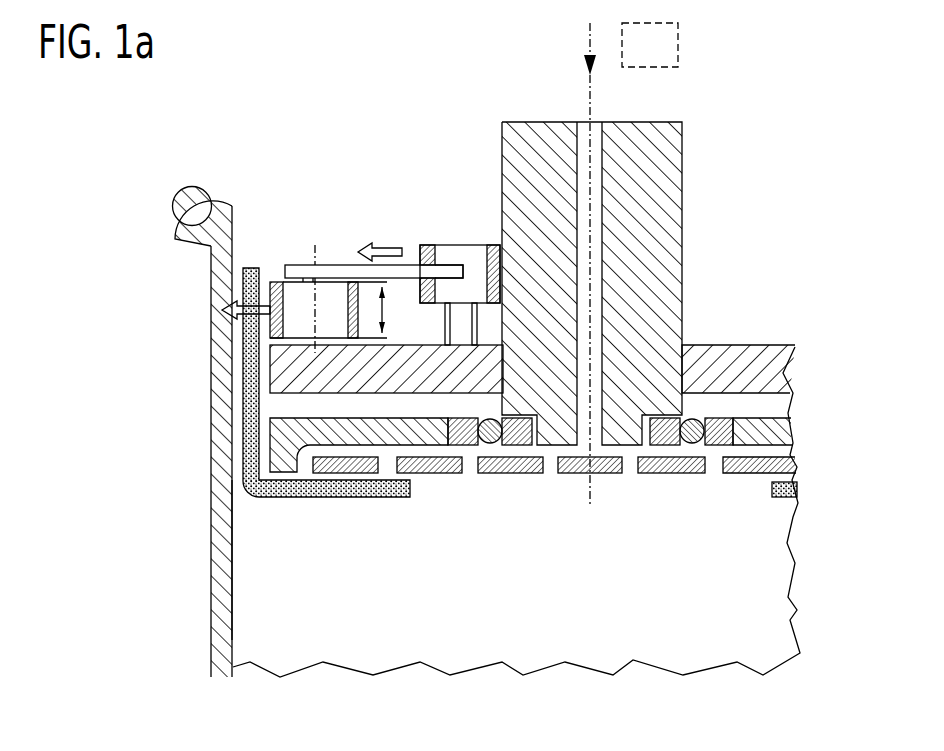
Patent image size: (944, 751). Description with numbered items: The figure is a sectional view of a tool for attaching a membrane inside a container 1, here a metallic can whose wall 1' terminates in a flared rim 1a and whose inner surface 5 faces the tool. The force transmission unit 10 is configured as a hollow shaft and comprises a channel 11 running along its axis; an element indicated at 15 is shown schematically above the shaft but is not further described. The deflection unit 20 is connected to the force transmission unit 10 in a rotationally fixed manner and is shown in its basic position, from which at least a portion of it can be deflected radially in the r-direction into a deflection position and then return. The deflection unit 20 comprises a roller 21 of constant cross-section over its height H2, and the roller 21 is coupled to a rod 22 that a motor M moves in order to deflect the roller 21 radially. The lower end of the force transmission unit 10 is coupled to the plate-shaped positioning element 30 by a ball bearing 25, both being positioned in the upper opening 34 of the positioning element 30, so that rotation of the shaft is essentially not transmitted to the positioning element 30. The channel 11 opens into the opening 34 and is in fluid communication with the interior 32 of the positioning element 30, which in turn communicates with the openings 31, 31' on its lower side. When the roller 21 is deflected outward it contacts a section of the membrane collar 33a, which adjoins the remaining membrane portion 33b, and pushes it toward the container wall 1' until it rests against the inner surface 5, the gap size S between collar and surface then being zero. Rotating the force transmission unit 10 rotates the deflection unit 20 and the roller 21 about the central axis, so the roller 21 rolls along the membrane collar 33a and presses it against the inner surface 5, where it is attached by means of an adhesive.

The container 1 is at (516, 538).
The container wall 1' is at (197, 441).
The flared rim 1a is at (190, 180).
The container inner surface 5 is at (232, 553).
The gap size S is at (238, 275).
The force transmission unit 10 is at (670, 168).
The channel 11 is at (587, 135).
The control unit 15 is at (664, 60).
The deflection unit 20 is at (283, 357).
The roller 21 is at (338, 293).
The actuating rod 22 is at (412, 268).
The motor M is at (472, 260).
The roller height H2 is at (398, 310).
The ball bearing 25 is at (455, 448).
The positioning element 30 is at (283, 441).
The opening 31 is at (471, 504).
The opening 31' is at (389, 503).
The interior 32 is at (507, 452).
The membrane collar 33a is at (250, 373).
The horizontal sealing strip 33b is at (340, 490).
The upper opening 34 is at (598, 433).